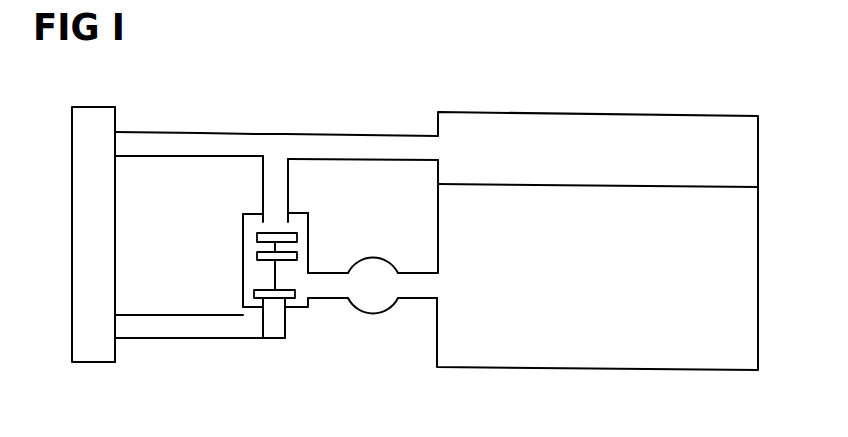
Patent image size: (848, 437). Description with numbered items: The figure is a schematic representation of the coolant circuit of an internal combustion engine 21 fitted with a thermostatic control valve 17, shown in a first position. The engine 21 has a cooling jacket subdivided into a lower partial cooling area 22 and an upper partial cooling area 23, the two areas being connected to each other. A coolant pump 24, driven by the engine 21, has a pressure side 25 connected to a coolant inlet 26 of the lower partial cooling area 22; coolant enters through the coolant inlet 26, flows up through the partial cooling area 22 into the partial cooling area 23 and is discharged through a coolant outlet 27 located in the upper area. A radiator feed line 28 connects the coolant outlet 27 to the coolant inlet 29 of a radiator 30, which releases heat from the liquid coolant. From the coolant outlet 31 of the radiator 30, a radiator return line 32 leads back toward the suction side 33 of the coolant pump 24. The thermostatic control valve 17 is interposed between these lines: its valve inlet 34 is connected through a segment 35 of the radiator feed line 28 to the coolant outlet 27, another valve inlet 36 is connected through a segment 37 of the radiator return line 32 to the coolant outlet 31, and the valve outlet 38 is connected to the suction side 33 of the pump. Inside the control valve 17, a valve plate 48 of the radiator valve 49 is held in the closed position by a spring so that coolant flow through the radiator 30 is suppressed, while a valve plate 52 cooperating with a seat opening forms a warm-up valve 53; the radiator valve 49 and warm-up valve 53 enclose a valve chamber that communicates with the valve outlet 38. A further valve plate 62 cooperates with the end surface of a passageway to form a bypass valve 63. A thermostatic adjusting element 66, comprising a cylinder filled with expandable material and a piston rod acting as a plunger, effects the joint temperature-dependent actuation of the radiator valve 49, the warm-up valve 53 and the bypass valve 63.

The thermostatic control valve 17 is at (275, 234).
The internal combustion engine 21 is at (597, 245).
The lower partial cooling area 22 is at (565, 340).
The upper partial cooling area 23 is at (615, 143).
The coolant pump 24 is at (373, 297).
The pressure side 25 is at (400, 298).
The coolant inlet 26 is at (437, 282).
The coolant outlet 27 is at (432, 150).
The radiator feed line 28 is at (270, 122).
The coolant inlet of the radiator 29 is at (120, 145).
The radiator 30 is at (70, 218).
The coolant outlet of the radiator 31 is at (118, 322).
The radiator return line 32 is at (238, 352).
The suction side 33 is at (327, 300).
The valve inlet 34 is at (265, 208).
The segment of the radiator feed line 35 is at (358, 147).
The valve inlet 36 is at (275, 307).
The segment of the radiator return line 37 is at (170, 322).
The valve outlet 38 is at (307, 287).
The valve plate 48 is at (302, 310).
The radiator valve 49 is at (240, 295).
The valve plate 52 is at (298, 257).
The warm-up valve 53 is at (240, 255).
The valve plate 62 is at (297, 237).
The bypass valve 63 is at (296, 219).
The thermostatic adjusting element 66 is at (260, 280).